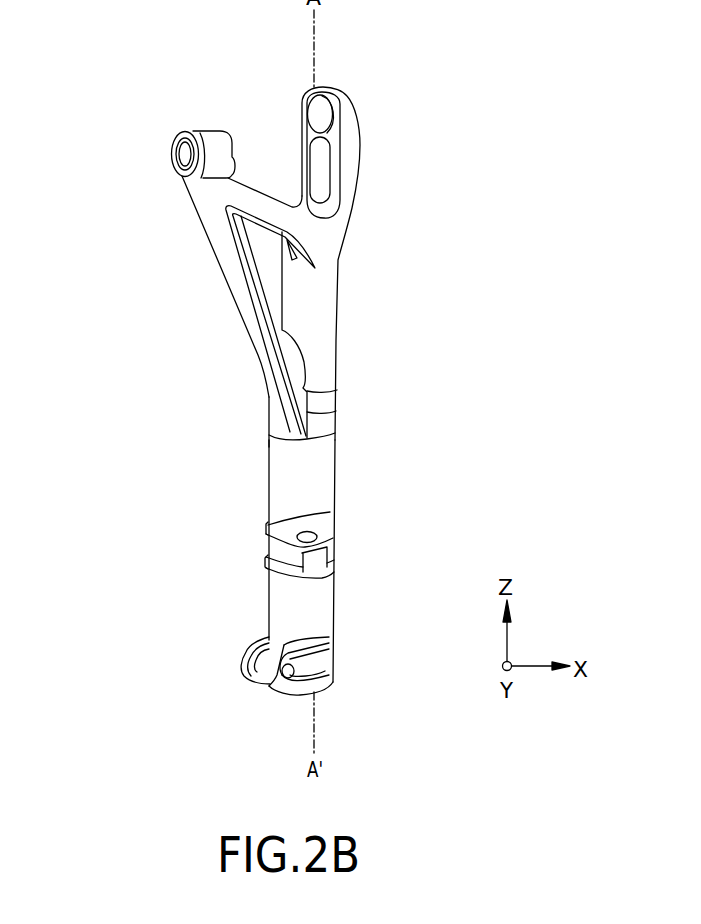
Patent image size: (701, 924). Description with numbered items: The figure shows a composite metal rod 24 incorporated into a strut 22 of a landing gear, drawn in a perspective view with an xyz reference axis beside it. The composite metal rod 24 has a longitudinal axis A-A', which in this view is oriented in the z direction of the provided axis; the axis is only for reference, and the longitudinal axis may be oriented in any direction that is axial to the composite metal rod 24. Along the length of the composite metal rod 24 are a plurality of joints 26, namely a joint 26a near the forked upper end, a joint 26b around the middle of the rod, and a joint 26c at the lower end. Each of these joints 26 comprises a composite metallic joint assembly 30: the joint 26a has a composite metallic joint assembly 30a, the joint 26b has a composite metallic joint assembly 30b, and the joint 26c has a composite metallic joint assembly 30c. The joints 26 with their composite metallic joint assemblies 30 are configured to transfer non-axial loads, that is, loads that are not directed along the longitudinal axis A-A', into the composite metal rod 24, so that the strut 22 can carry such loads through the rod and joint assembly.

The strut 22 is at (95, 107).
The composite metal rod 24 is at (322, 466).
The joints 26 is at (357, 409).
The joint 26a is at (272, 395).
The joint 26b is at (334, 531).
The joint 26c is at (249, 655).
The composite metallic joint assembly 30 is at (178, 577).
The composite metallic joint assembly 30a is at (246, 442).
The composite metallic joint assembly 30b is at (243, 548).
The composite metallic joint assembly 30c is at (219, 678).